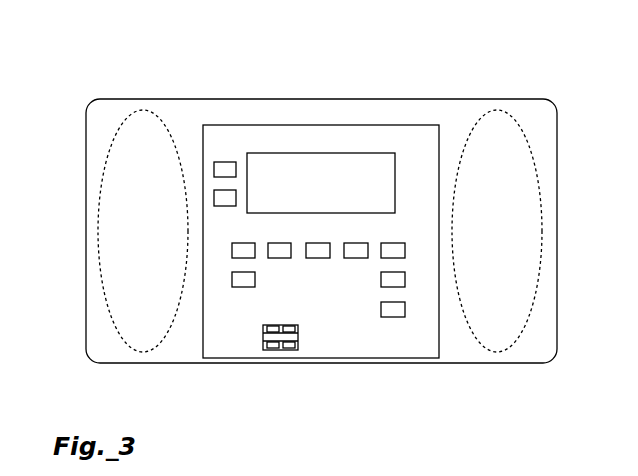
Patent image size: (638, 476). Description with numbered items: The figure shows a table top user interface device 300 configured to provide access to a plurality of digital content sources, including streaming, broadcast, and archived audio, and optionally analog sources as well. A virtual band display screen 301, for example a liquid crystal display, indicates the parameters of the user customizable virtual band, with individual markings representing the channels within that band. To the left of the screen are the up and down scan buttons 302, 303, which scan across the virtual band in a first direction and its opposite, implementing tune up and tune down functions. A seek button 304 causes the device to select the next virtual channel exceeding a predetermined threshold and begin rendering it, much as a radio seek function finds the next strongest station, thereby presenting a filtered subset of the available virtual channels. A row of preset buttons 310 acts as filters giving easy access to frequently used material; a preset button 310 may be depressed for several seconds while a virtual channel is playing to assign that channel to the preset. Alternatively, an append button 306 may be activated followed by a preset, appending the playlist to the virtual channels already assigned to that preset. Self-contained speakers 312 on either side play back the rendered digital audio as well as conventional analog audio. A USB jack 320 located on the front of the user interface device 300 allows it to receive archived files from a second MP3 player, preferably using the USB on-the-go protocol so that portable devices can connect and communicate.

The user interface device 300 is at (334, 72).
The virtual band display screen 301 is at (321, 183).
The up scan button 302 is at (222, 162).
The down scan button 303 is at (214, 198).
The seek button 304 is at (237, 287).
The append button 306 is at (392, 287).
The preset buttons 310 is at (388, 258).
The speakers 312 is at (107, 163).
The USB jack 320 is at (278, 350).